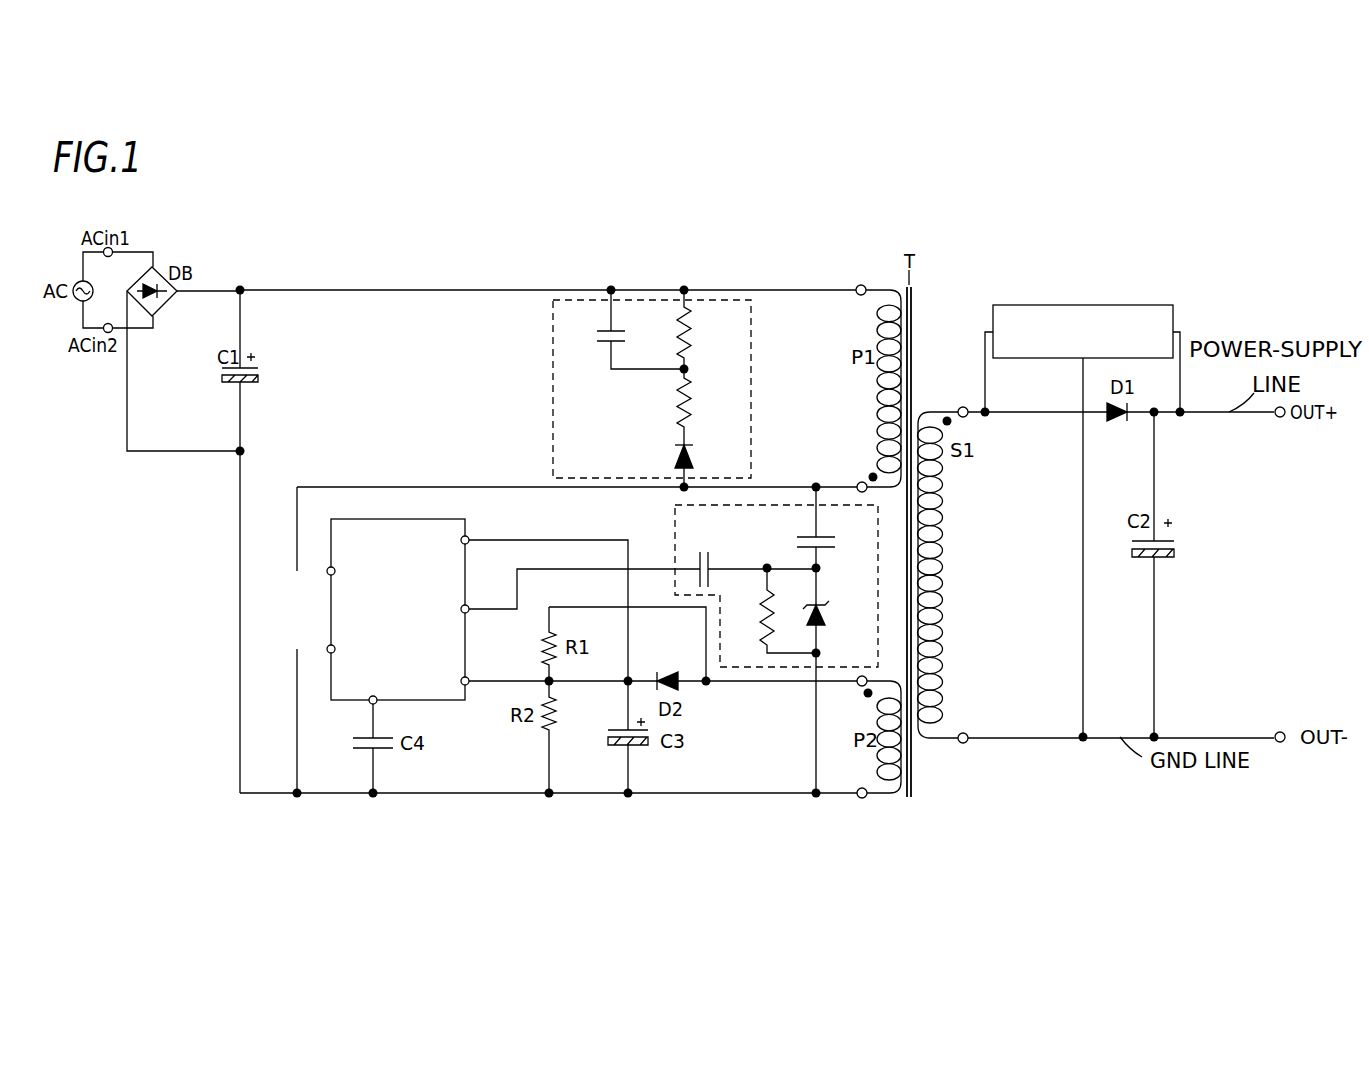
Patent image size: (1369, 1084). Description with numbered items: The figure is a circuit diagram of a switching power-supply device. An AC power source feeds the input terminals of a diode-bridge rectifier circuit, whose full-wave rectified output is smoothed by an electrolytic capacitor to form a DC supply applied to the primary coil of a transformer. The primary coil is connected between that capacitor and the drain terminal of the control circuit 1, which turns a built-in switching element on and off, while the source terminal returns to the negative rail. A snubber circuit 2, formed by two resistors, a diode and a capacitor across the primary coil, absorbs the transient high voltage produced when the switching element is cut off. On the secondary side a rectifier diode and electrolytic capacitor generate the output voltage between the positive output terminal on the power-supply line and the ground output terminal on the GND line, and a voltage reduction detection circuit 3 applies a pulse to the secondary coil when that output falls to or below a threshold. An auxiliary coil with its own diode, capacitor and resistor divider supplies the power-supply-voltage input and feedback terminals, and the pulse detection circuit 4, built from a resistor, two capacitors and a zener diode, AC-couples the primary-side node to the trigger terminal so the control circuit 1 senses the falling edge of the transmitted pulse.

The control circuit 1 is at (415, 519).
The snubber circuit 2 is at (753, 338).
The voltage reduction detection circuit 3 is at (1082, 305).
The pulse detection circuit 4 is at (675, 532).